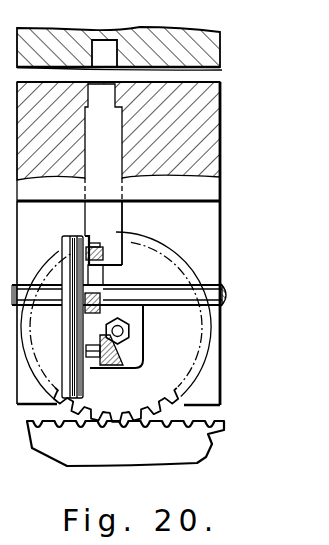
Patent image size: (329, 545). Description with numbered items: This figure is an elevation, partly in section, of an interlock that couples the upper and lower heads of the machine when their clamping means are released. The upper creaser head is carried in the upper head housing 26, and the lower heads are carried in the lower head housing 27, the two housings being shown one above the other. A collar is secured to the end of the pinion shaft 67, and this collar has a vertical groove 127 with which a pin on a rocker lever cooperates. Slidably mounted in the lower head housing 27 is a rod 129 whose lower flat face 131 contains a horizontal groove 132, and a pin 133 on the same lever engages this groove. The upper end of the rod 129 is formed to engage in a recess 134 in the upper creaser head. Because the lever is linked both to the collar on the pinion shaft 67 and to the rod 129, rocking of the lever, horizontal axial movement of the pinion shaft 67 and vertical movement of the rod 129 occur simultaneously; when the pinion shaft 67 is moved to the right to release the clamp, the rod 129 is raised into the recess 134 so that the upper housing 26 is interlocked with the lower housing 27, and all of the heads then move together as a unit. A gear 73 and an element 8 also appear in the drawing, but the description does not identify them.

The upper head housing 26 is at (206, 48).
The recess 134 is at (222, 70).
The lower head housing 27 is at (204, 128).
The rod 129 is at (107, 220).
The pin 133 is at (90, 252).
The lower flat face 131 is at (152, 236).
The horizontal groove 132 is at (105, 263).
The pinion shaft 67 is at (131, 330).
The vertical groove 127 is at (95, 368).
The gear 73 is at (179, 377).
The bolt 8 is at (95, 350).